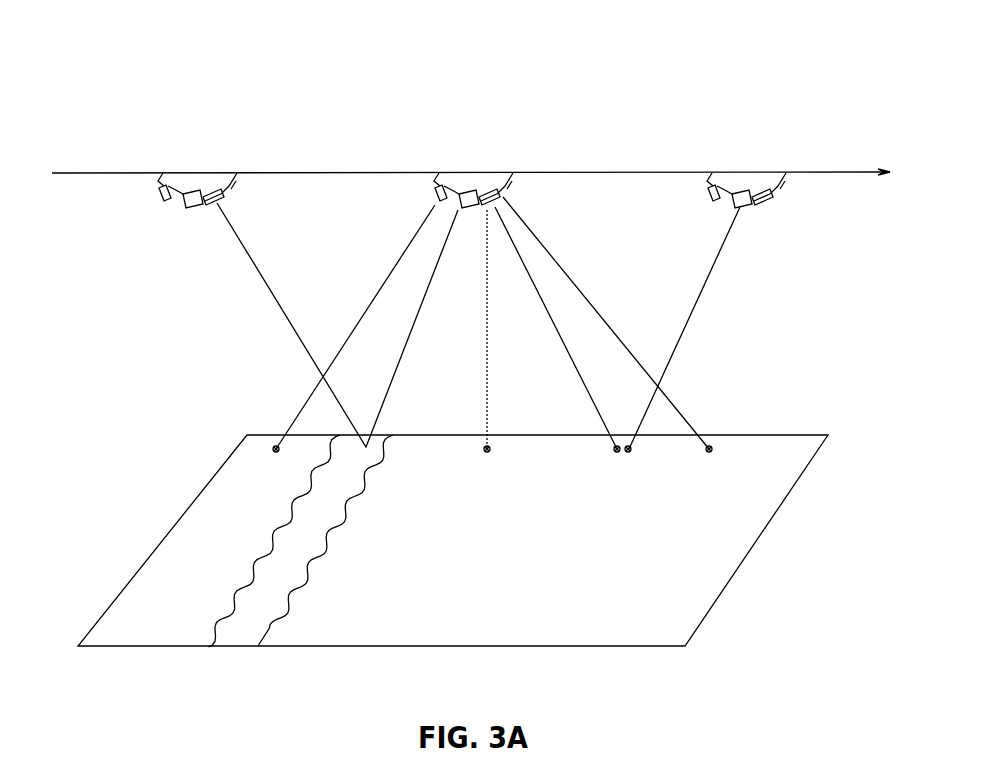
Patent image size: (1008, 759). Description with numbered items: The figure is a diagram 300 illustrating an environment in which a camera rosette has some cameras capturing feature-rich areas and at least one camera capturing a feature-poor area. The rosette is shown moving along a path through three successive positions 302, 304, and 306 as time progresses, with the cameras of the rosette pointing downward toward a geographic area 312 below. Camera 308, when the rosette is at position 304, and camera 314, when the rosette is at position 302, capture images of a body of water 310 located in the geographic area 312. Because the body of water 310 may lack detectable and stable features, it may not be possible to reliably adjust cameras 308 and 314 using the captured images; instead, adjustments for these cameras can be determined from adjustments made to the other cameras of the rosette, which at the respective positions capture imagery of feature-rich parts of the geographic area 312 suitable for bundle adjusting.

The diagram 300 is at (865, 58).
The position 302 is at (198, 178).
The position 304 is at (478, 178).
The position 306 is at (747, 178).
The camera 308 is at (463, 213).
The body of water 310 is at (271, 630).
The geographic area 312 is at (755, 542).
The camera 314 is at (200, 207).